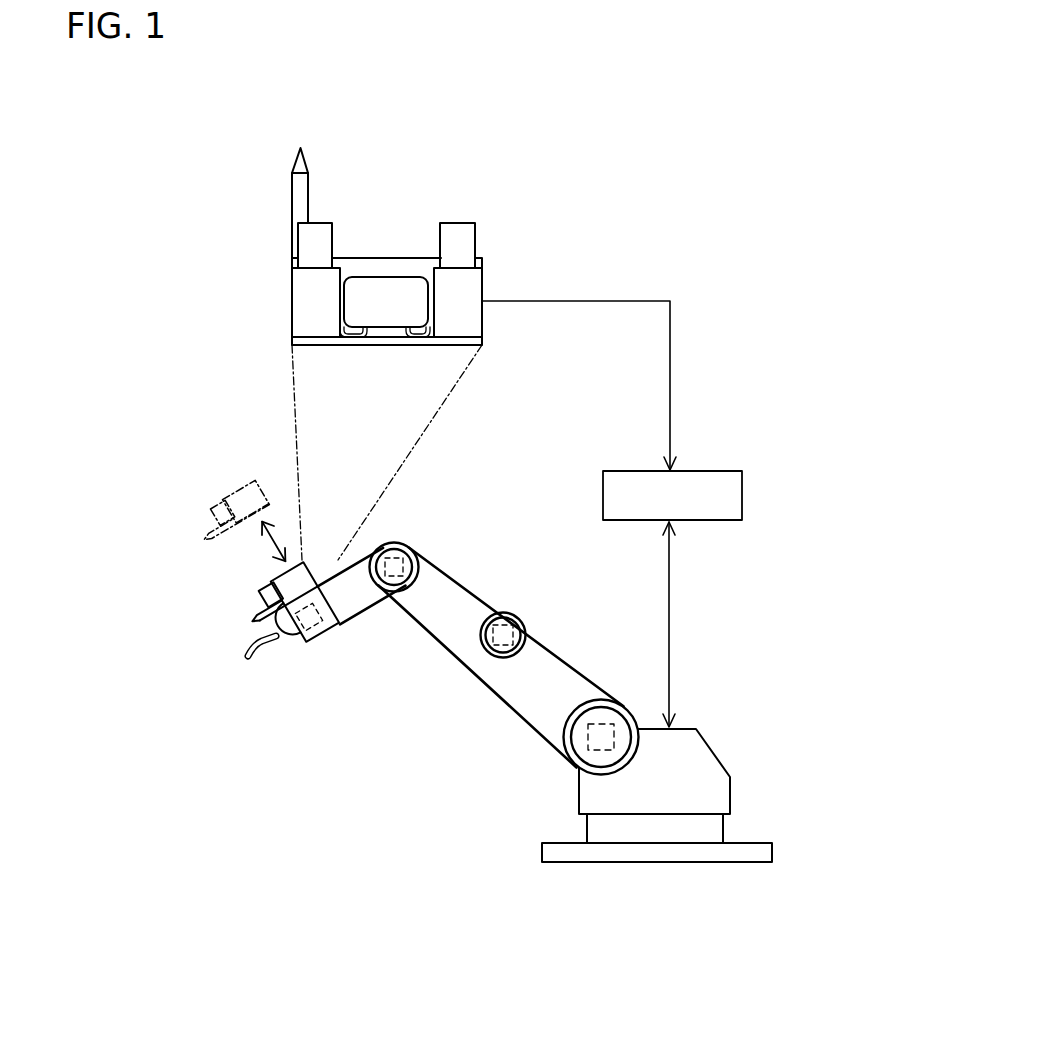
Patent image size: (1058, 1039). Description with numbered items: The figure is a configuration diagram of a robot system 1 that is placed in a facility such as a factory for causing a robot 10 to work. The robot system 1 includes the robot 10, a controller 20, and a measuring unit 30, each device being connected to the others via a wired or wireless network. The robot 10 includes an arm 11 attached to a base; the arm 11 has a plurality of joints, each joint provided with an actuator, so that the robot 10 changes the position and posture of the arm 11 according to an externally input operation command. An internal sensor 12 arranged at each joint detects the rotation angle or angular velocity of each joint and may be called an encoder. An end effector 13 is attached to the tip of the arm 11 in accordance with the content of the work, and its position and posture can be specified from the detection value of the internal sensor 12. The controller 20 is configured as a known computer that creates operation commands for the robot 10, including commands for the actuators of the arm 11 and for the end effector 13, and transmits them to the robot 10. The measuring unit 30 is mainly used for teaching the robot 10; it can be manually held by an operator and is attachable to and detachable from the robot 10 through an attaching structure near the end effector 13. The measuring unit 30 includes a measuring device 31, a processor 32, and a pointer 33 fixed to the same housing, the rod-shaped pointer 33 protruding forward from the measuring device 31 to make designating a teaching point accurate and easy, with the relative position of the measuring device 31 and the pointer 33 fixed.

The robot system 1 is at (849, 163).
The robot 10 is at (743, 720).
The arm 11 is at (558, 655).
The internal sensor 12 is at (576, 730).
The end effector 13 is at (280, 645).
The controller 20 is at (742, 490).
The measuring unit 30 is at (321, 351).
The measuring device 31 is at (458, 227).
The processor 32 is at (387, 320).
The pointer 33 is at (296, 202).